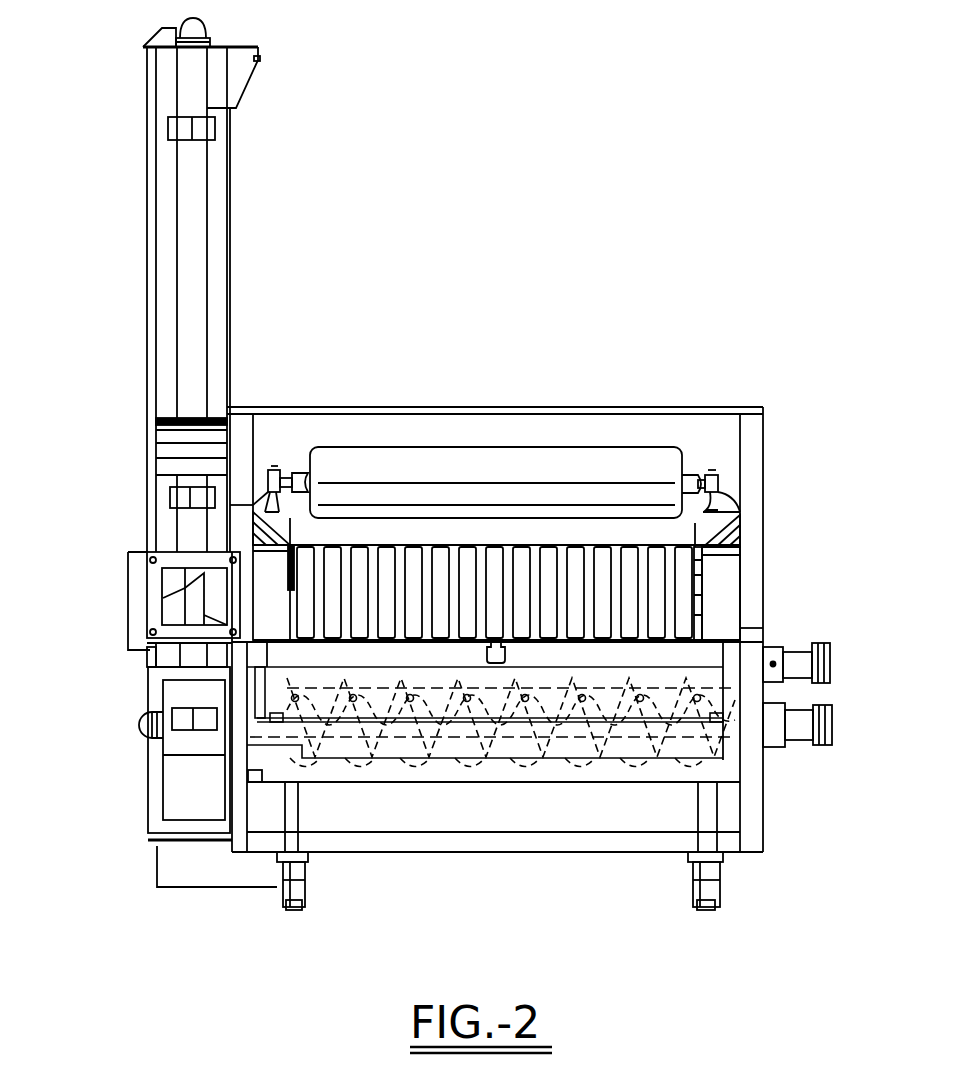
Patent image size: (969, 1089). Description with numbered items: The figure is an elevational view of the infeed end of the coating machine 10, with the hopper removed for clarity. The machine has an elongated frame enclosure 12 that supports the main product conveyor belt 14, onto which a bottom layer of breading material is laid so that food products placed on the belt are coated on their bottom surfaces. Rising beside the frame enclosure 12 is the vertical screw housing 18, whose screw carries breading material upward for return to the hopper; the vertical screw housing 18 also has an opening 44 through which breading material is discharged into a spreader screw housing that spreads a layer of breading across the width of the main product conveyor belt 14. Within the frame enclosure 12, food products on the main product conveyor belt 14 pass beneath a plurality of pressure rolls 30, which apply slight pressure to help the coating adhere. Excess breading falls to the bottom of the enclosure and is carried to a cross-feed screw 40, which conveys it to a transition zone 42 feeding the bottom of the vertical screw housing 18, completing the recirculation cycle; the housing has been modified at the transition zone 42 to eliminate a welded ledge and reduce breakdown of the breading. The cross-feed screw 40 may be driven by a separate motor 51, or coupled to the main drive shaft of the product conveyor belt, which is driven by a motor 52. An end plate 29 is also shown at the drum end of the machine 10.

The coating machine 10 is at (420, 364).
The frame enclosure 12 is at (527, 407).
The main product conveyor belt 14 is at (688, 607).
The vertical screw housing 18 is at (147, 275).
The drum end plate 29 is at (716, 568).
The pressure rolls 30 is at (567, 450).
The cross-feed screw 40 is at (508, 765).
The transition zone 42 is at (165, 783).
The opening 44 is at (163, 597).
The motor 51 is at (832, 730).
The motor 52 is at (832, 645).